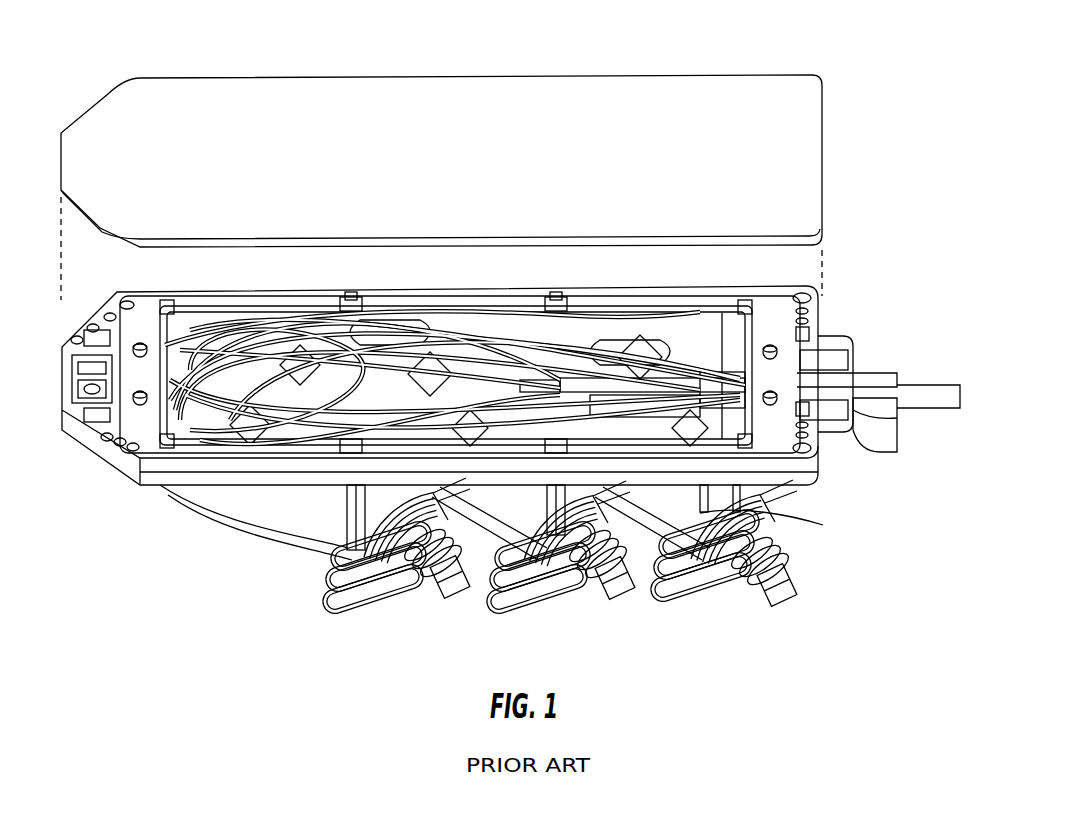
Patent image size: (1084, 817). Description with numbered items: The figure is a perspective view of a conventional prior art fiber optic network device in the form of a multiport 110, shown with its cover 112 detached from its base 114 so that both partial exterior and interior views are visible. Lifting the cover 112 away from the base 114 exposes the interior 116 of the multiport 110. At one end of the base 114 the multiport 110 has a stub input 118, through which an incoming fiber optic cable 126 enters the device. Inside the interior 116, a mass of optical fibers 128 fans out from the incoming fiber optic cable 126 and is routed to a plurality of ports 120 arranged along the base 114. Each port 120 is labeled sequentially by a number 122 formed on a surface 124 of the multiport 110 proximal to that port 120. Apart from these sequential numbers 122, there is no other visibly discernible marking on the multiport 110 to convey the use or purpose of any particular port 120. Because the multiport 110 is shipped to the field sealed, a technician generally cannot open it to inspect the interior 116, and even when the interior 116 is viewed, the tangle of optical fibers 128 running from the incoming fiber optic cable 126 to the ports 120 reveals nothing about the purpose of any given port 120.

The multiport 110 is at (502, 350).
The cover 112 is at (203, 77).
The base 114 is at (108, 477).
The interior 116 is at (735, 335).
The stub input 118 is at (868, 368).
The ports 120 is at (428, 600).
The number 122 is at (313, 552).
The surface 124 is at (508, 522).
The incoming fiber optic cable 126 is at (900, 398).
The optical fibers 128 is at (228, 430).